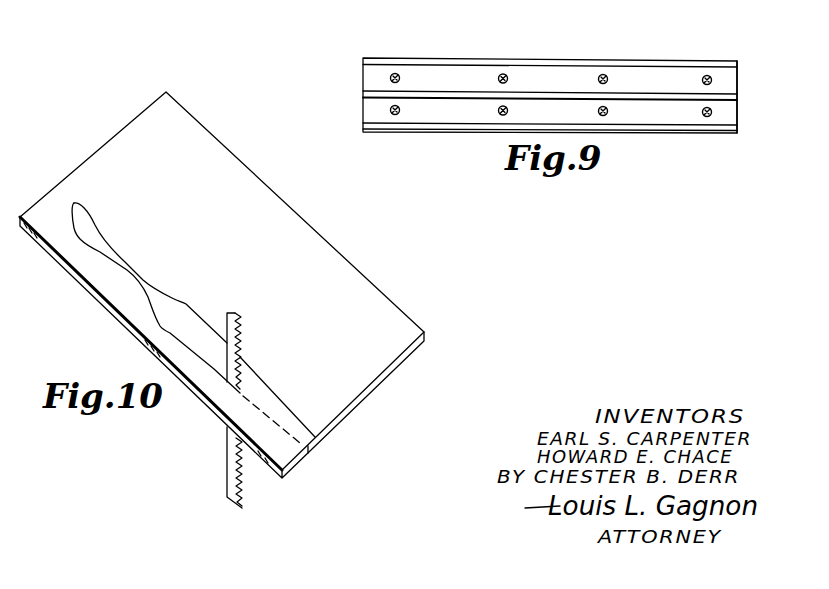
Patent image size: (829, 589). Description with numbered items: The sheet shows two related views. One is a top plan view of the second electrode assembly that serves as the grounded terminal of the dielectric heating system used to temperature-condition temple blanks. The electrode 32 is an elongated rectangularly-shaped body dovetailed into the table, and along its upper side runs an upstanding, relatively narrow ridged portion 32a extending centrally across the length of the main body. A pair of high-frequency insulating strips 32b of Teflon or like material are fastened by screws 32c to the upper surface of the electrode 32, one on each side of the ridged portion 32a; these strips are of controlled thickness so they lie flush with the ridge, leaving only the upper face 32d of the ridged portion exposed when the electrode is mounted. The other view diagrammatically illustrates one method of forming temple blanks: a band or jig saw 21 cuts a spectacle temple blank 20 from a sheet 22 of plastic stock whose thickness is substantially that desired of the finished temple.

In FIG. 9, the electrode 32 is at (695, 58).
In FIG. 9, the upstanding ridged portion 32a is at (625, 93).
In FIG. 9, the insulating strips 32b is at (733, 82).
In FIG. 9, the screws 32c is at (400, 77).
In FIG. 9, the upper face of ridged portion 32d is at (652, 97).
In FIG. 10, the spectacle temple blank 20 is at (172, 312).
In FIG. 10, the band or jig saw 21 is at (236, 318).
In FIG. 10, the sheet of plastic stock material 22 is at (100, 163).